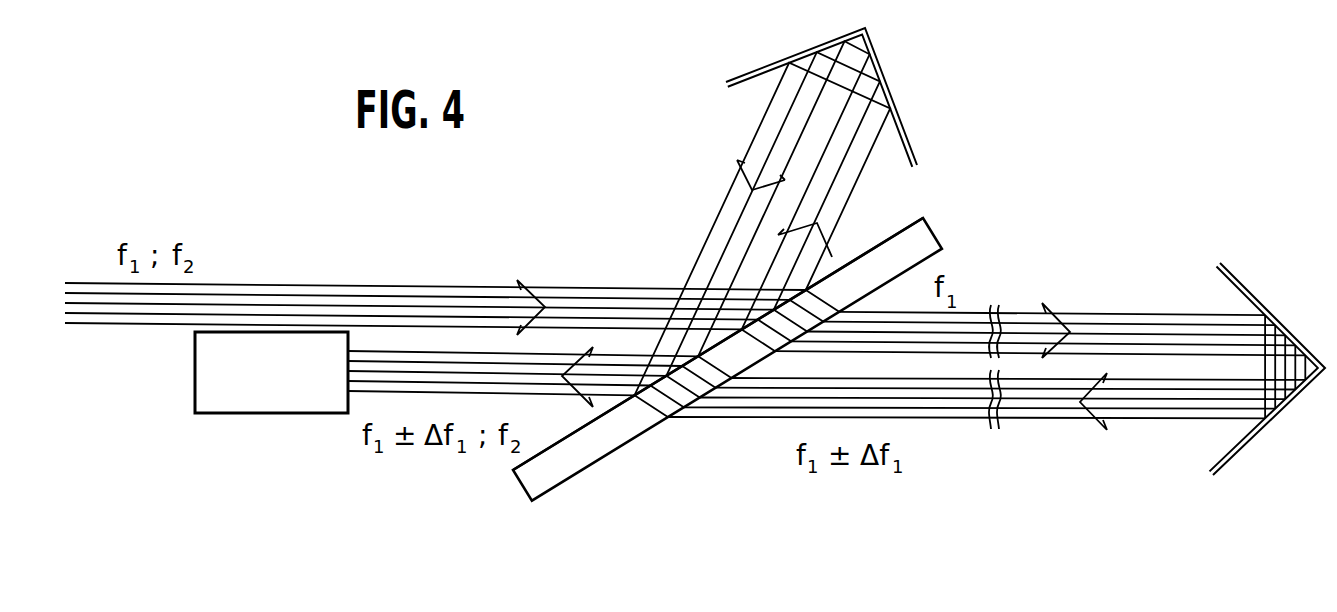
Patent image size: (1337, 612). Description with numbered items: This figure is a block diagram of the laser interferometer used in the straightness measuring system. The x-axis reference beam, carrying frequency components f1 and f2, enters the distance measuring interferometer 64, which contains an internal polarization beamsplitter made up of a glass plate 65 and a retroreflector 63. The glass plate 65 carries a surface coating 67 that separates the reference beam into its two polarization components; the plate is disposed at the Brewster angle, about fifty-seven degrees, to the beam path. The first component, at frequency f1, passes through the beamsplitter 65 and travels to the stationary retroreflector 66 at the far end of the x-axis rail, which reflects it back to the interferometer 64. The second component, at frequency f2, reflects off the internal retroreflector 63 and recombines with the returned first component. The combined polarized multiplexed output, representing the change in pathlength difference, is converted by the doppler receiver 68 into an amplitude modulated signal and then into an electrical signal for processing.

The retroreflector 63 is at (767, 70).
The distance measuring interferometer 64 is at (656, 195).
The glass plate 65 is at (608, 455).
The retroreflector 66 is at (1264, 303).
The surface coating 67 is at (513, 468).
The doppler receiver 68 is at (218, 414).